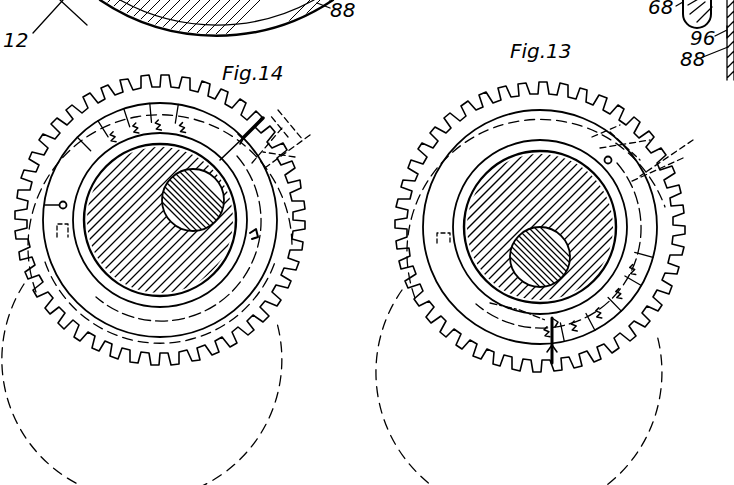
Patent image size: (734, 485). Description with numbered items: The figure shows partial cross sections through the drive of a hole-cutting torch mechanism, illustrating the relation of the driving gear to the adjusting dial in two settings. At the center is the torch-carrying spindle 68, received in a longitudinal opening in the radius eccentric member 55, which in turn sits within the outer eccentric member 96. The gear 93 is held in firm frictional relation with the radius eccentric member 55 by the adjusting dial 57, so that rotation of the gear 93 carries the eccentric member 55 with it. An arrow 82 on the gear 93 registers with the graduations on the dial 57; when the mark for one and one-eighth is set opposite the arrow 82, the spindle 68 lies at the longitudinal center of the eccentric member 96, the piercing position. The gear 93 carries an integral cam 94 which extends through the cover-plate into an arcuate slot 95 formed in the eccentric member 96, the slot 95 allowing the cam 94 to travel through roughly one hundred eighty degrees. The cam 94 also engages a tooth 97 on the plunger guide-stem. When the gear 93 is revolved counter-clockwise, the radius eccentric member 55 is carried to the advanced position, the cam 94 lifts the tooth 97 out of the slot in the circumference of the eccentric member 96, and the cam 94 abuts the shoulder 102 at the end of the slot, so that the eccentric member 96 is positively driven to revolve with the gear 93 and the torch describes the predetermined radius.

In FIG. 14, the radius eccentric member 55 is at (250, 217).
In FIG. 13, the radius eccentric member 55 is at (587, 207).
In FIG. 14, the adjusting dial 57 is at (233, 287).
In FIG. 13, the adjusting dial 57 is at (625, 277).
In FIG. 14, the spindle 68 is at (197, 197).
In FIG. 13, the spindle 68 is at (600, 220).
In FIG. 14, the arrow 82 is at (247, 136).
In FIG. 13, the arrow 82 is at (558, 348).
In FIG. 14, the gear 93 is at (282, 239).
In FIG. 13, the gear 93 is at (655, 264).
In FIG. 14, the cam 94 is at (280, 176).
In FIG. 13, the cam 94 is at (440, 346).
In FIG. 14, the arcuate slot 95 is at (277, 263).
In FIG. 13, the arcuate slot 95 is at (412, 287).
In FIG. 14, the eccentric member 96 is at (273, 325).
In FIG. 13, the eccentric member 96 is at (660, 330).
In FIG. 14, the tooth 97 is at (295, 157).
In FIG. 13, the tooth 97 is at (683, 158).
In FIG. 14, the shoulder 102 is at (263, 132).
In FIG. 13, the shoulder 102 is at (605, 135).